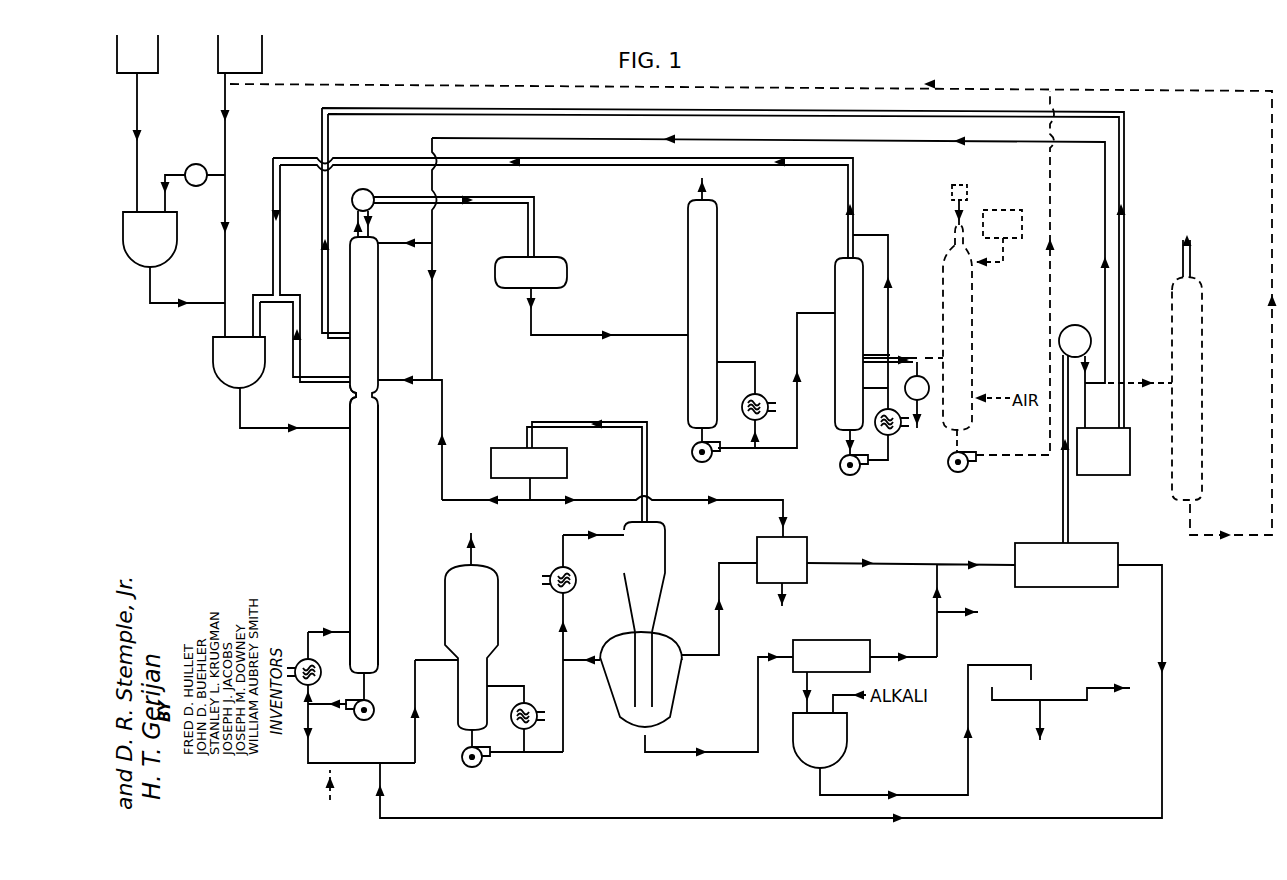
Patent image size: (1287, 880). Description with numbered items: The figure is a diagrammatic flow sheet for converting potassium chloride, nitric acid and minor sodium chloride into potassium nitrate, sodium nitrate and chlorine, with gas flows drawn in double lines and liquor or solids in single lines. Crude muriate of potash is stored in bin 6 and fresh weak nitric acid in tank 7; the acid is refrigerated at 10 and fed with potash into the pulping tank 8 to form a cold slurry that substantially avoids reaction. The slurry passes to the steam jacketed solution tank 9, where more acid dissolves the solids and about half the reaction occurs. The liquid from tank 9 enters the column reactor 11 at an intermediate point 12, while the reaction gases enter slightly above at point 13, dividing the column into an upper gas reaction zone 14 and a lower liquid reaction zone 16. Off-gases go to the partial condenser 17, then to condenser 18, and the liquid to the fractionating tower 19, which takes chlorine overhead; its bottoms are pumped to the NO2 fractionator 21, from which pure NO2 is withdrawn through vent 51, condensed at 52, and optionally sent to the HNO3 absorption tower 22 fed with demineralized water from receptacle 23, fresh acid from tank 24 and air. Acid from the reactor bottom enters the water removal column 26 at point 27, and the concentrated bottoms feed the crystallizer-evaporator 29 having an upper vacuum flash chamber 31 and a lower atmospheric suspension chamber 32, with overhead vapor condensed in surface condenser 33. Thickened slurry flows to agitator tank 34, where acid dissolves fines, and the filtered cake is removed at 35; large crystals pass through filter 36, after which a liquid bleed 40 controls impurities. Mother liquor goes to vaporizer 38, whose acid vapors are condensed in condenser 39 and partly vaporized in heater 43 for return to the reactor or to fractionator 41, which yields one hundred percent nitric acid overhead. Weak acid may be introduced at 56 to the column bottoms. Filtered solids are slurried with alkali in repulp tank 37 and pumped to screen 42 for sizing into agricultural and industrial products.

The bin 6 is at (158, 63).
The tank 7 is at (262, 63).
The pulping tank 8 is at (130, 258).
The solution tank 9 is at (213, 372).
The refrigeration 10 is at (196, 164).
The column reactor 11 is at (346, 503).
The intermediate point 12 is at (350, 433).
The point 13 is at (350, 389).
The upper gas reaction zone 14 is at (366, 354).
The lower liquid reaction zone 16 is at (366, 562).
The partial condenser 17 is at (372, 193).
The condenser 18 is at (540, 262).
The fractionating tower 19 is at (700, 274).
The NO2 fractionator 21 is at (838, 286).
The HNO3 absorption tower 22 is at (974, 342).
The receptacle 23 is at (967, 192).
The tank 24 is at (1018, 228).
The water removal column 26 is at (496, 632).
The point 27 is at (452, 658).
The crystallizer-evaporator 29 is at (658, 617).
The upper vacuum flash chamber 31 is at (652, 562).
The lower atmospheric suspension chamber 32 is at (662, 708).
The surface condenser 33 is at (505, 460).
The agitator tank 34 is at (797, 550).
The cake removal 35 is at (784, 600).
The filter 36 is at (823, 656).
The repulp tank 37 is at (847, 740).
The vaporizer 38 is at (1095, 543).
The condenser 39 is at (1072, 325).
The liquid bleed 40 is at (966, 616).
The fractionator 41 is at (1203, 352).
The screen 42 is at (990, 692).
The heater 43 is at (1105, 476).
The vent 51 is at (877, 350).
The condenser 52 is at (926, 398).
The weak acid introduction point 56 is at (330, 765).